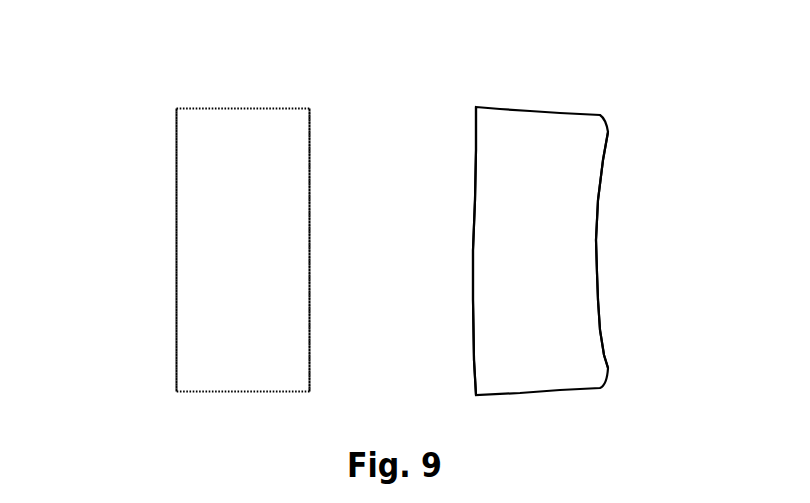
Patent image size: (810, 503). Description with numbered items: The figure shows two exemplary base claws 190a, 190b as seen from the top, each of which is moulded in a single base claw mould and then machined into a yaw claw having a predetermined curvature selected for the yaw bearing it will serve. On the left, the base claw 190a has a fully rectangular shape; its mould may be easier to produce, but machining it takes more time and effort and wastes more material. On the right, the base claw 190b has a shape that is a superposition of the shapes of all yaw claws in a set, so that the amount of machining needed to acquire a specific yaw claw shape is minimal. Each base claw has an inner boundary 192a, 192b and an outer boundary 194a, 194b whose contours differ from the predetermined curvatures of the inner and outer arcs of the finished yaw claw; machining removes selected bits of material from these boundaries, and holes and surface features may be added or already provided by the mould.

The base claw 190a is at (160, 83).
The base claw 190b is at (603, 108).
The inner boundary 192a is at (310, 214).
The inner boundary 192b is at (612, 273).
The outer boundary 194a is at (176, 240).
The outer boundary 194b is at (476, 322).